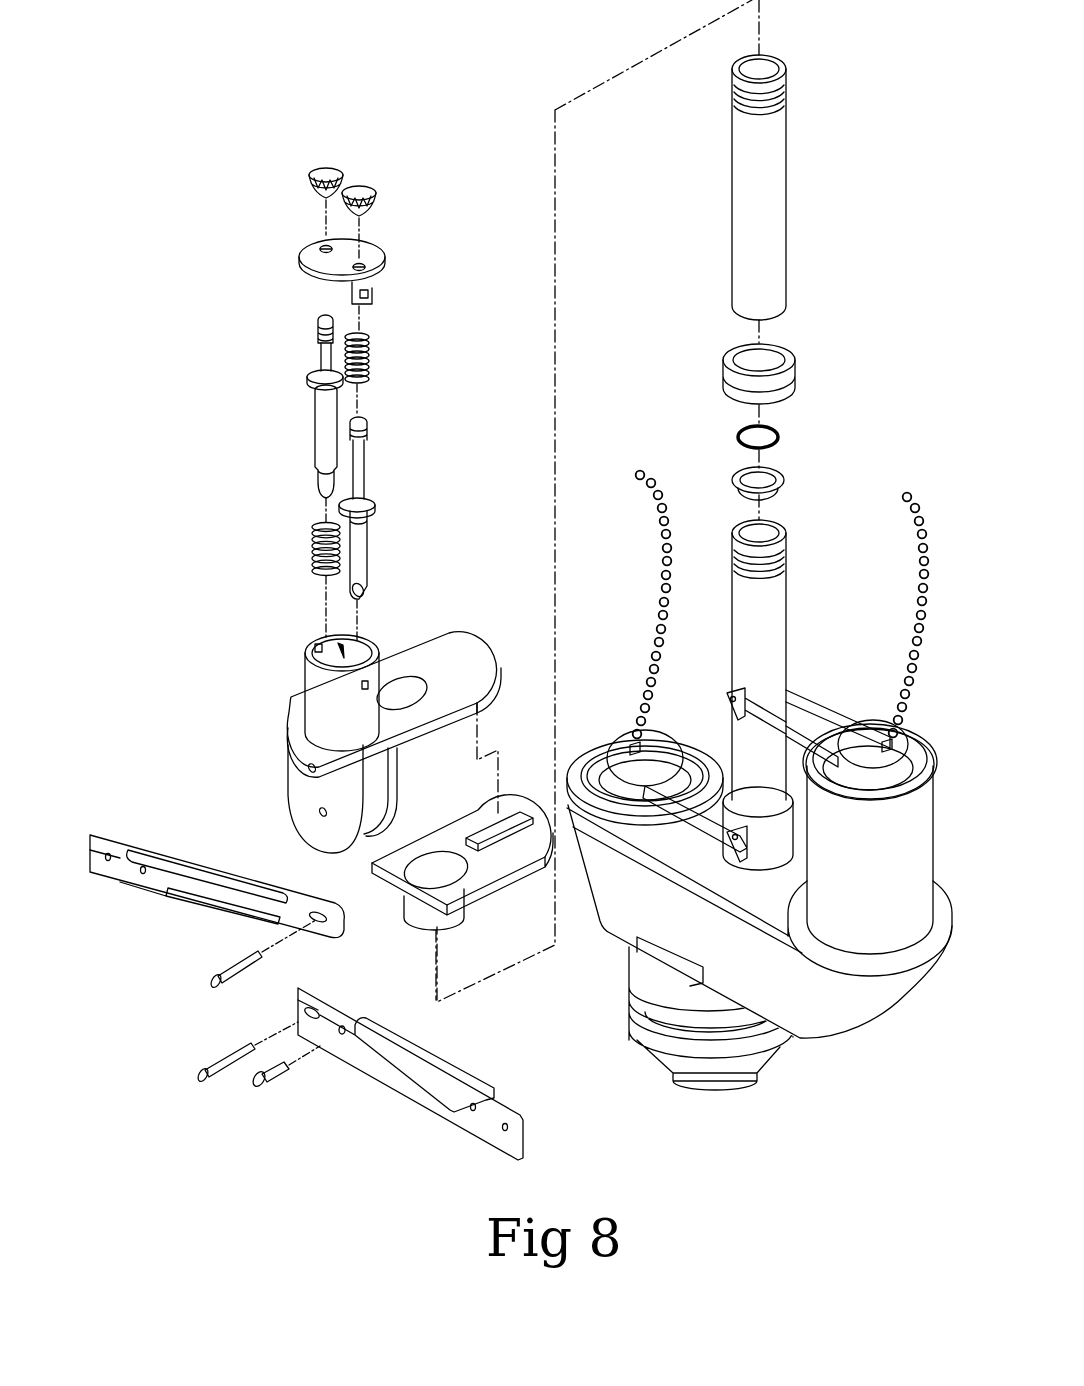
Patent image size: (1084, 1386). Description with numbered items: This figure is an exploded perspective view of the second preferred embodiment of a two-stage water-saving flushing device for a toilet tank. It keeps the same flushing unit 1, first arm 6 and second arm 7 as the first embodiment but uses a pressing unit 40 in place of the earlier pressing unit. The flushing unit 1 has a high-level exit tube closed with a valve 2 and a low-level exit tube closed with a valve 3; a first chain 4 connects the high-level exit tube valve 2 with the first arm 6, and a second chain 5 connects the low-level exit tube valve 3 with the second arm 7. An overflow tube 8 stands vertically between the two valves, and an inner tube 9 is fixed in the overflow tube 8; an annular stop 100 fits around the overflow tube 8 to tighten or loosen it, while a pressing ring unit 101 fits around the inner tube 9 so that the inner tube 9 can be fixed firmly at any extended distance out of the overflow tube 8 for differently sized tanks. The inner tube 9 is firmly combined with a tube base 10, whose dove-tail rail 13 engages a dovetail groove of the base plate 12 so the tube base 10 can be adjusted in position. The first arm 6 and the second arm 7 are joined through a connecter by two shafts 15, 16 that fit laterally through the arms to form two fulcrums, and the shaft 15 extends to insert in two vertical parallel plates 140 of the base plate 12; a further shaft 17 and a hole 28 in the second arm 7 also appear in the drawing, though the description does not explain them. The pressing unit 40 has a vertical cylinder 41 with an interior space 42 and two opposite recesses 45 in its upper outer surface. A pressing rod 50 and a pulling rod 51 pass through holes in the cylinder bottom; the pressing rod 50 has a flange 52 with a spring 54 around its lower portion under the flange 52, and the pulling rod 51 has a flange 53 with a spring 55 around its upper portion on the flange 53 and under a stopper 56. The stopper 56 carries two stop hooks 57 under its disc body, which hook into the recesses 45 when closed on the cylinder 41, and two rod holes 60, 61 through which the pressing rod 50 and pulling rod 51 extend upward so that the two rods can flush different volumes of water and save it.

The flushing unit 1 is at (895, 1077).
The high-level exit tube valve 2 is at (905, 762).
The low-level exit tube valve 3 is at (614, 766).
The first chain 4 is at (926, 598).
The second chain 5 is at (660, 612).
The first arm 6 is at (122, 875).
The second arm 7 is at (526, 1125).
The overflow tube 8 is at (778, 641).
The inner tube 9 is at (777, 171).
The tube base 10 is at (450, 926).
The base plate 12 is at (468, 650).
The dove-tail rail 13 is at (500, 828).
The shaft 15 is at (212, 986).
The shaft 16 is at (198, 1082).
The screw 17 is at (256, 1086).
The hole 28 is at (341, 1036).
The pressing unit 40 is at (210, 619).
The vertical cylinder 41 is at (308, 694).
The interior space 42 is at (342, 656).
The recess 45 is at (304, 664).
The pressing rod 50 is at (316, 432).
The pulling rod 51 is at (368, 447).
The flange 52 is at (311, 374).
The flange 53 is at (377, 516).
The spring 54 is at (312, 554).
The spring 55 is at (371, 364).
The stopper 56 is at (372, 249).
The stop hook 57 is at (370, 297).
The rod hole 60 is at (322, 170).
The rod hole 61 is at (362, 190).
The annular stop 100 is at (797, 380).
The pressing ring unit 101 is at (783, 483).
The vertical parallel plates 140 is at (362, 803).